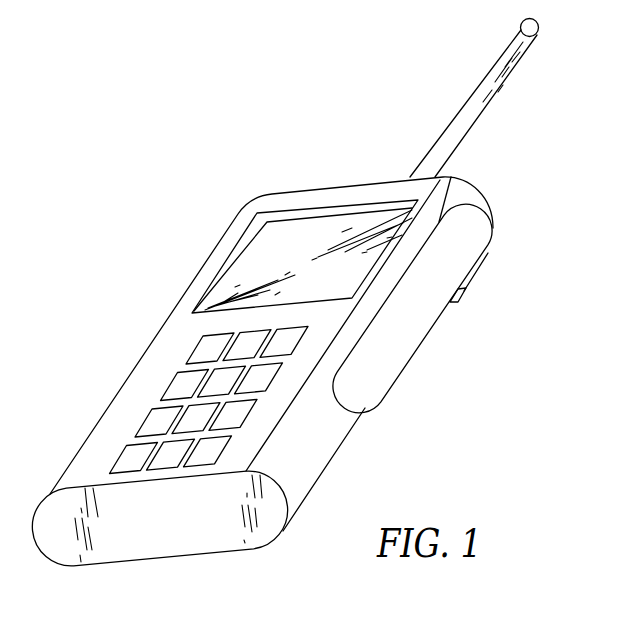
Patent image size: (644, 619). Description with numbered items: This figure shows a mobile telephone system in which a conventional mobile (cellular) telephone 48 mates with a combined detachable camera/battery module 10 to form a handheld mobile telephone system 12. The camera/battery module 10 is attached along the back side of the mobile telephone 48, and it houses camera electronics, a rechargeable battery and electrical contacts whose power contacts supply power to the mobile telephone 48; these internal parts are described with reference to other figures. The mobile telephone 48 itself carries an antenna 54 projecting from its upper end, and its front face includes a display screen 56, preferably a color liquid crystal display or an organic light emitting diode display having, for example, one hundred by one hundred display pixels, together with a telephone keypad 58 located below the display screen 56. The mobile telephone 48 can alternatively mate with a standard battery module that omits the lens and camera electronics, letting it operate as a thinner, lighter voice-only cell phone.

The camera/battery module 10 is at (433, 327).
The handheld mobile telephone system 12 is at (311, 292).
The mobile telephone 48 is at (194, 285).
The antenna 54 is at (464, 104).
The display screen 56 is at (305, 231).
The telephone keypad 58 is at (152, 378).